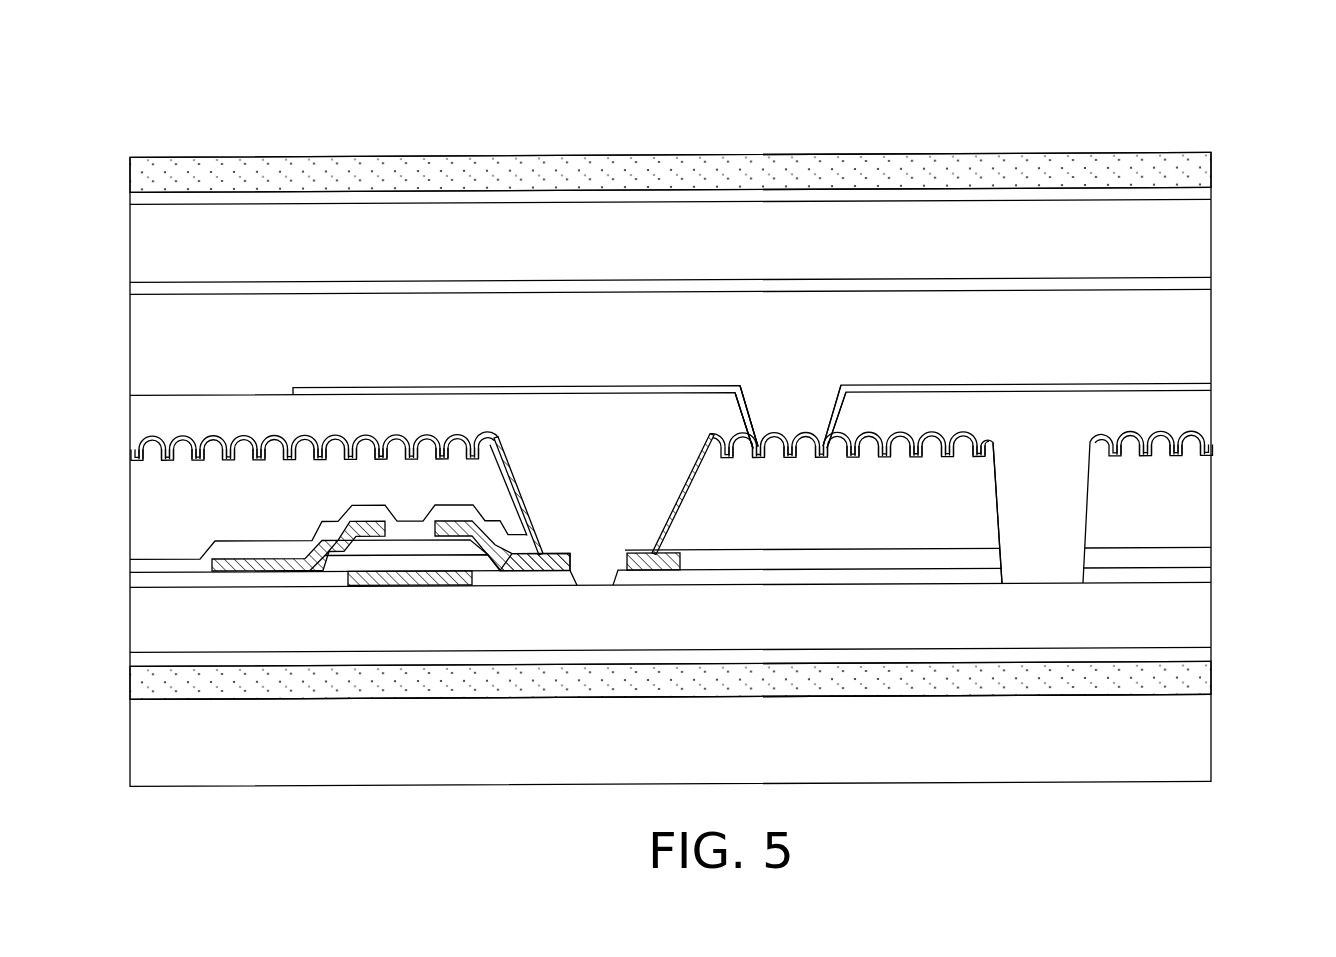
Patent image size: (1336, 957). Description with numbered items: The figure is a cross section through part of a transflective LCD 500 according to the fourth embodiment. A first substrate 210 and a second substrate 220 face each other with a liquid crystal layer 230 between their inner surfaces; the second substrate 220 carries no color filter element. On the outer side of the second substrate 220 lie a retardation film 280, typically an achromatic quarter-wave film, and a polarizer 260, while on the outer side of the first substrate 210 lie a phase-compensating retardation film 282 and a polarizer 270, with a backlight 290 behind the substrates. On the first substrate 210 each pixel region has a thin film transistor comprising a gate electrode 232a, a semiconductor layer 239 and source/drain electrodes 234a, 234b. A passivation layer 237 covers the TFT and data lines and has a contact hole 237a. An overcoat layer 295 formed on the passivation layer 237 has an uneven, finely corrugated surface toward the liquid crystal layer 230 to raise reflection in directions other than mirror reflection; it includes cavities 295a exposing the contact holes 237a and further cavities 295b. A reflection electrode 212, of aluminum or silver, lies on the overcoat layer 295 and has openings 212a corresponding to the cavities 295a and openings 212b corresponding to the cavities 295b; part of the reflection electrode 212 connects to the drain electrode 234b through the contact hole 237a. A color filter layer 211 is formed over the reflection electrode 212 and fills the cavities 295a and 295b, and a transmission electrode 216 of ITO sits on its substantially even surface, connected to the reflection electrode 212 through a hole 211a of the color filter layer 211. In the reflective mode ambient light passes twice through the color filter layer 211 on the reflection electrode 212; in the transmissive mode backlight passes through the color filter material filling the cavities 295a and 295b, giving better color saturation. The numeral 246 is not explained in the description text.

The transflective LCD 500 is at (148, 126).
The polarizer 260 is at (803, 172).
The retardation film 280 is at (1202, 191).
The second substrate 220 is at (145, 240).
The common electrode 246 is at (545, 287).
The liquid crystal layer 230 is at (145, 375).
The transmission electrode 216 is at (1185, 388).
The color filter layer 211 is at (567, 428).
The hole of the color filter layer 211a is at (738, 395).
The overcoat layer 295 is at (145, 512).
The cavities of the overcoat layer 295a is at (500, 477).
The cavities of the overcoat layer 295b is at (1000, 520).
The reflection electrode 212 is at (1153, 430).
The openings of the reflection electrode 212a is at (573, 555).
The openings of the reflection electrode 212b is at (995, 440).
The passivation layer 237 is at (1200, 560).
The contact hole 237a is at (680, 548).
The source electrode 234a is at (263, 572).
The drain electrode 234b is at (534, 573).
The semiconductor layer 239 is at (392, 548).
The gate electrode 232a is at (450, 574).
The first substrate 210 is at (145, 630).
The retardation film 282 is at (1202, 653).
The polarizer 270 is at (1202, 675).
The backlight 290 is at (1200, 747).